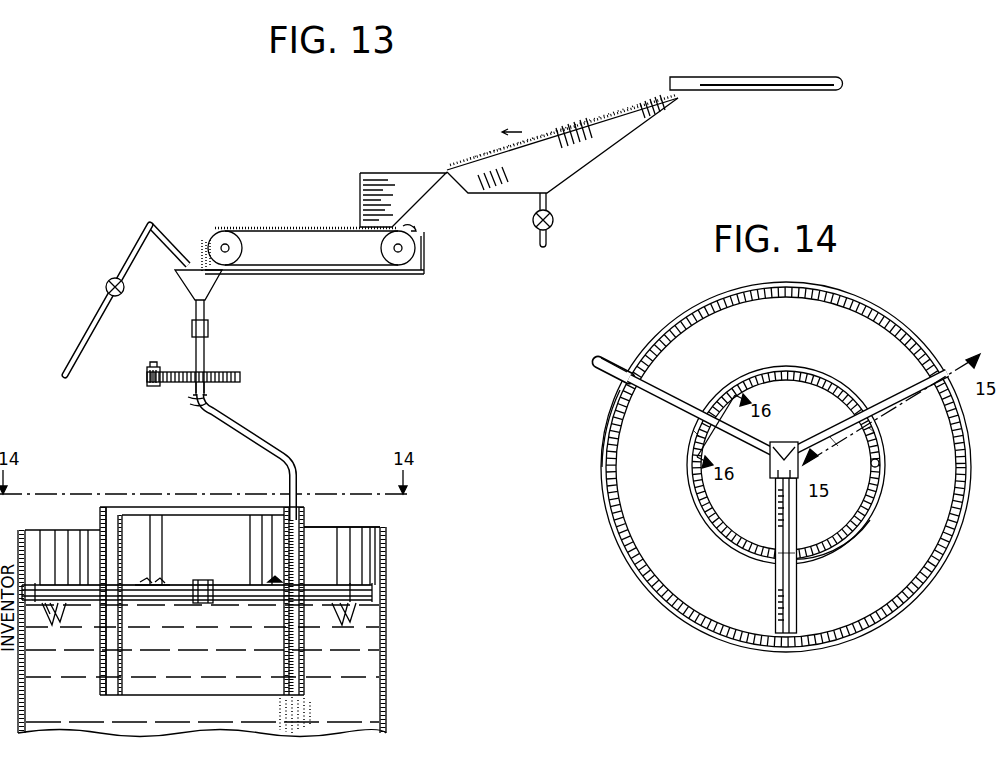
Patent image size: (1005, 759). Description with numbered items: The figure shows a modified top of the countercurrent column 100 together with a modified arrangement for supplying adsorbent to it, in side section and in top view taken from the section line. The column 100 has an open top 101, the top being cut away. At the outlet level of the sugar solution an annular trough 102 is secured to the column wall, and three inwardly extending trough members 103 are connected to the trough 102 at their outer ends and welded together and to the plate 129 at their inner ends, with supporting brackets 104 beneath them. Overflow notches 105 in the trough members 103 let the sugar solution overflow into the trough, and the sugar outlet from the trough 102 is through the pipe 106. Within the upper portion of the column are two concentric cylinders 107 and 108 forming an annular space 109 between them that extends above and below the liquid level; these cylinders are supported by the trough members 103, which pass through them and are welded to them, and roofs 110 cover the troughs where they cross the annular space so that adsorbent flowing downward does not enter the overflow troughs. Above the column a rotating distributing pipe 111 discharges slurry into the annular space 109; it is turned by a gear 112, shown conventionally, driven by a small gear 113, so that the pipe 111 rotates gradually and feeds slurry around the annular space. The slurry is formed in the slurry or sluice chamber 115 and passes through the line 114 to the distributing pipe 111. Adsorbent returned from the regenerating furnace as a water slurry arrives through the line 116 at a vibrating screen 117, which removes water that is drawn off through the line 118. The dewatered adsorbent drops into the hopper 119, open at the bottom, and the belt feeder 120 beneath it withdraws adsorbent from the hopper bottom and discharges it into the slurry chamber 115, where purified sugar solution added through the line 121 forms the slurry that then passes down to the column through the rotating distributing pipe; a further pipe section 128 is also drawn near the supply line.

In FIG. 13, the countercurrent column 100 is at (386, 643).
In FIG. 14, the countercurrent column 100 is at (925, 578).
In FIG. 13, the open top 101 is at (328, 528).
In FIG. 13, the annular trough 102 is at (385, 590).
In FIG. 14, the annular trough 102 is at (606, 498).
In FIG. 13, the trough members 103 is at (152, 603).
In FIG. 14, the trough members 103 is at (668, 373).
In FIG. 13, the supporting brackets 104 is at (55, 612).
In FIG. 13, the overflow notches 105 is at (148, 584).
In FIG. 14, the overflow notches 105 is at (838, 445).
In FIG. 14, the pipe 106 is at (612, 372).
In FIG. 13, the cylinder 107 is at (100, 517).
In FIG. 14, the cylinder 107 is at (845, 387).
In FIG. 13, the cylinder 108 is at (125, 541).
In FIG. 14, the cylinder 108 is at (832, 393).
In FIG. 13, the annular space 109 is at (118, 525).
In FIG. 14, the annular space 109 is at (860, 523).
In FIG. 13, the roofs 110 is at (272, 580).
In FIG. 14, the roofs 110 is at (693, 430).
In FIG. 13, the rotating distributing pipe 111 is at (240, 436).
In FIG. 14, the rotating distributing pipe 111 is at (880, 464).
In FIG. 13, the gear 112 is at (240, 375).
In FIG. 13, the small gear 113 is at (147, 373).
In FIG. 13, the line 114 is at (205, 352).
In FIG. 13, the slurry chamber 115 is at (210, 285).
In FIG. 13, the line 116 is at (743, 85).
In FIG. 13, the vibrating screen 117 is at (562, 128).
In FIG. 13, the line 118 is at (552, 203).
In FIG. 13, the hopper 119 is at (360, 180).
In FIG. 13, the belt feeder 120 is at (267, 228).
In FIG. 13, the line 121 is at (90, 326).
In FIG. 13, the pipe section 128 is at (165, 243).
In FIG. 13, the plate 129 is at (214, 581).
In FIG. 14, the plate 129 is at (797, 490).